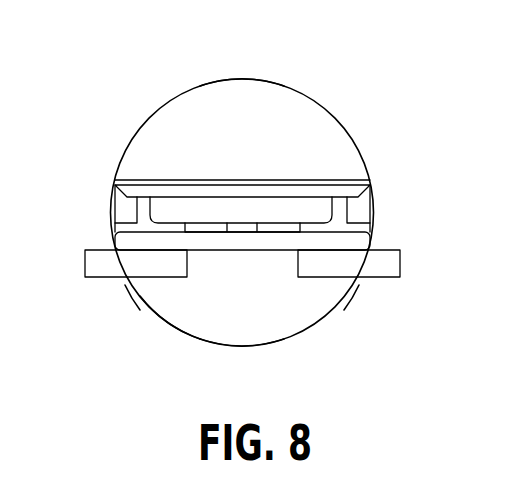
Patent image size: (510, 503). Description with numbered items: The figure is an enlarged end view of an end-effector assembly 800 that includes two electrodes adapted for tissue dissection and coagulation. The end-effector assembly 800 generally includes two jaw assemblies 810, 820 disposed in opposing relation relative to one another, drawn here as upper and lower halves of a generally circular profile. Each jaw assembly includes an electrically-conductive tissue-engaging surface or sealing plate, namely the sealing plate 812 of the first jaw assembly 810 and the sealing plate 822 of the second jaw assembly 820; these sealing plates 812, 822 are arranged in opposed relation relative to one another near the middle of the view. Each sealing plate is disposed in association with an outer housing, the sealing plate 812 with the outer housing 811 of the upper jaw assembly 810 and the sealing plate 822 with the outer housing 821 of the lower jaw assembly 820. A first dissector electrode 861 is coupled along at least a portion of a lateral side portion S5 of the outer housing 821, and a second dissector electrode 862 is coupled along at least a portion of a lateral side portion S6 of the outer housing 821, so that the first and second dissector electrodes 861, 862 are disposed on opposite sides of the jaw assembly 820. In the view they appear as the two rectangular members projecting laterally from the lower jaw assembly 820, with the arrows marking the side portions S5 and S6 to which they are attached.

The end-effector assembly 800 is at (131, 42).
The jaw assembly 810 is at (353, 116).
The outer housing 811 is at (282, 83).
The sealing plate 812 is at (365, 195).
The jaw assembly 820 is at (216, 353).
The outer housing 821 is at (167, 327).
The sealing plate 822 is at (117, 240).
The first dissector electrode 861 is at (400, 265).
The second dissector electrode 862 is at (100, 267).
The lateral side portion S5 is at (364, 303).
The lateral side portion S6 is at (117, 301).